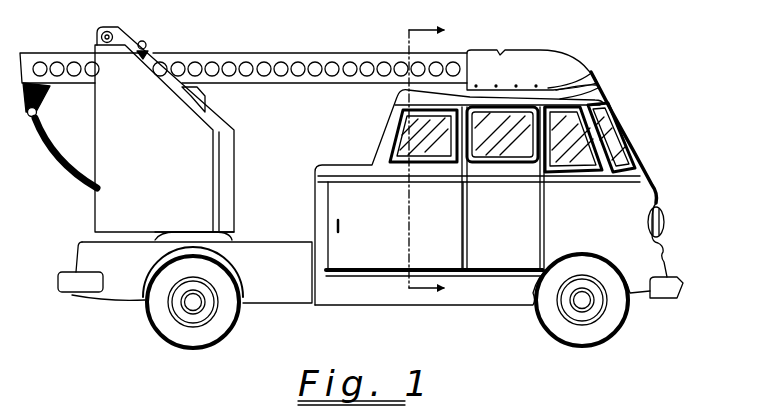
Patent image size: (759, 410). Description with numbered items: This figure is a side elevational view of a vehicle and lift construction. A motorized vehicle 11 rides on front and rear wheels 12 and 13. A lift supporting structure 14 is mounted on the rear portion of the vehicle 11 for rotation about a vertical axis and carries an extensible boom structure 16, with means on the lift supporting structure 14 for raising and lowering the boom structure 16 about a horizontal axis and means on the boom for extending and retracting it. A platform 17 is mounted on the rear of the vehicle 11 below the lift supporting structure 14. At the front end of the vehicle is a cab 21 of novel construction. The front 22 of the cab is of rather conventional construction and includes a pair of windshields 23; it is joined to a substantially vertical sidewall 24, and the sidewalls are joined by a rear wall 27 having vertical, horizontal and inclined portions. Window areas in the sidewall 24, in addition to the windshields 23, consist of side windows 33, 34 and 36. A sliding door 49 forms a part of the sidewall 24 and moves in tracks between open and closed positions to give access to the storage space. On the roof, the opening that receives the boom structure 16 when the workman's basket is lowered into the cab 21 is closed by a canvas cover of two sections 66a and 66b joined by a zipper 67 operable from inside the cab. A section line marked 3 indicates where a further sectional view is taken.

The motorized vehicle 11 is at (692, 250).
The front wheels 12 is at (612, 328).
The rear wheels 13 is at (188, 340).
The lift supporting structure 14 is at (100, 188).
The extensible boom structure 16 is at (297, 55).
The platform 17 is at (125, 294).
The cab 21 is at (631, 116).
The front of the cab 22 is at (661, 184).
The windshields 23 is at (625, 157).
The sidewall 24 is at (501, 310).
The rear wall 27 is at (306, 197).
The side window 33 is at (570, 160).
The side window 34 is at (517, 152).
The side window 36 is at (438, 153).
The sliding door 49 is at (374, 257).
The canvas cover section 66a is at (580, 68).
The canvas cover section 66b is at (596, 88).
The zipper 67 is at (573, 63).
The section line 3- 3 is at (438, 161).